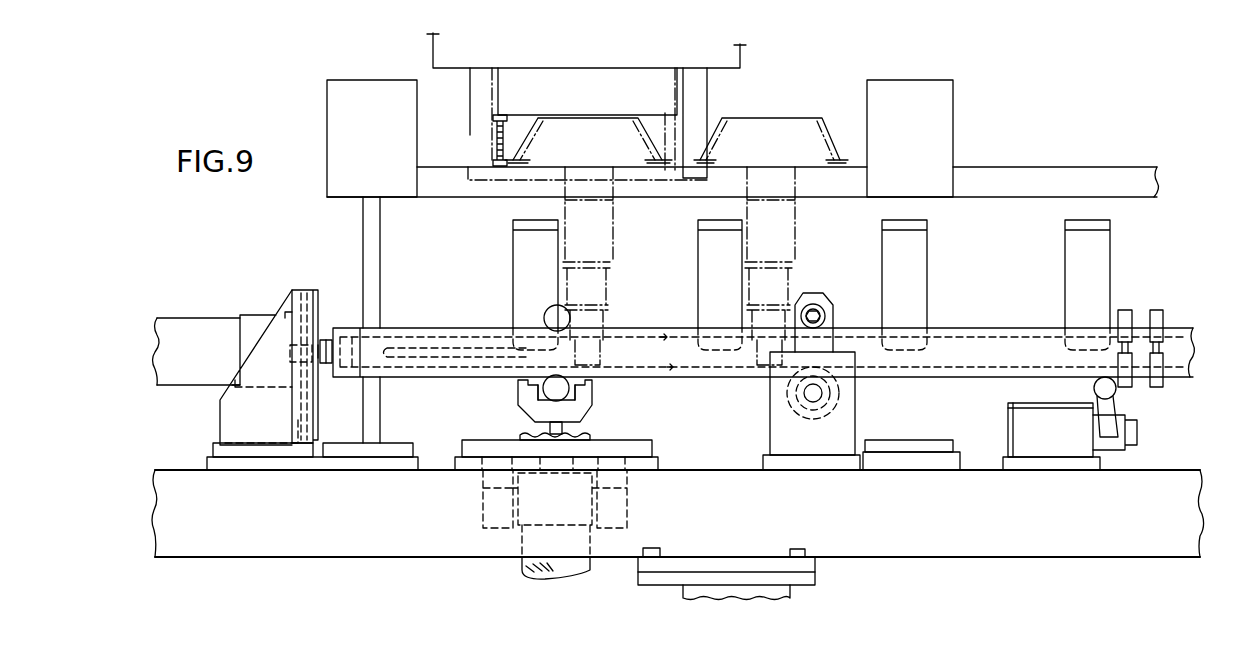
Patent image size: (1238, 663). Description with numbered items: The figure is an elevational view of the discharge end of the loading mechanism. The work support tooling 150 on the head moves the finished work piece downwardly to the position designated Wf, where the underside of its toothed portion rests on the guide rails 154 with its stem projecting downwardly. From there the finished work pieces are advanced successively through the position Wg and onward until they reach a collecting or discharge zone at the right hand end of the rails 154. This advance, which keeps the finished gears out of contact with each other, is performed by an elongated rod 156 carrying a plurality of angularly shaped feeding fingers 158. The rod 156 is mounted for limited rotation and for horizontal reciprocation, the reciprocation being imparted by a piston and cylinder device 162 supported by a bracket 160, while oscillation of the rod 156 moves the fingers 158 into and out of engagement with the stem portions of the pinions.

The work support tooling 150 is at (707, 92).
The guide rails 154 is at (1022, 167).
The elongated rod 156 is at (1003, 330).
The feeding fingers 158 is at (915, 277).
The bracket 160 is at (294, 290).
The piston and cylinder device 162 is at (221, 312).
The finished work piece position Wf is at (512, 88).
The subsequent work piece position Wg is at (808, 92).